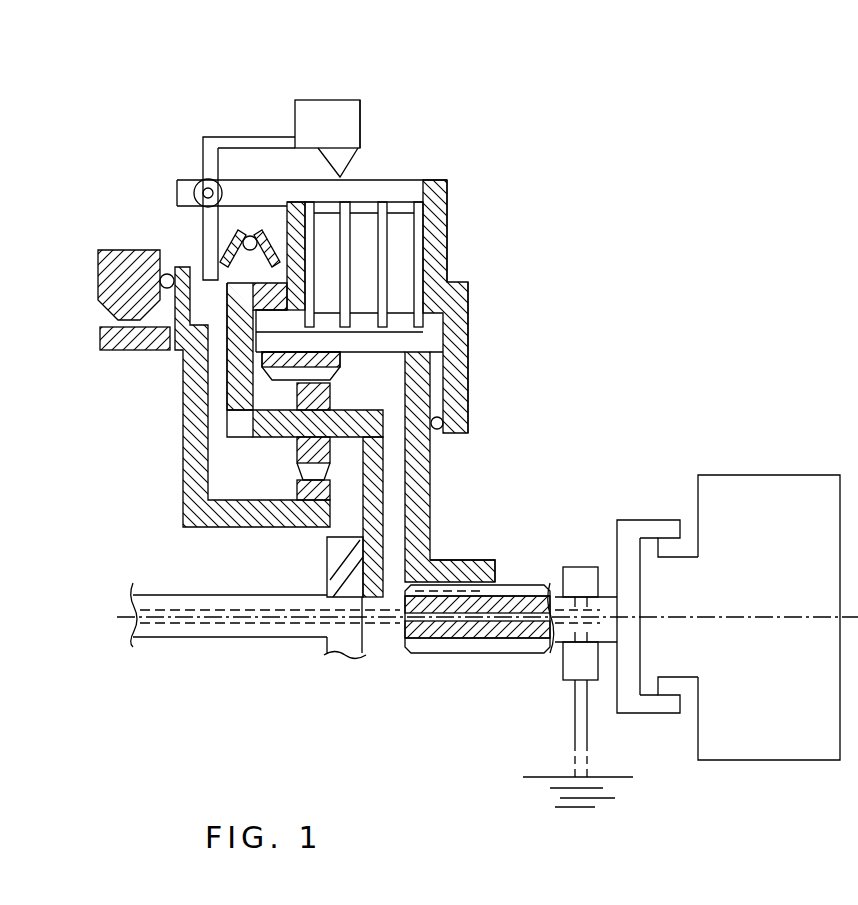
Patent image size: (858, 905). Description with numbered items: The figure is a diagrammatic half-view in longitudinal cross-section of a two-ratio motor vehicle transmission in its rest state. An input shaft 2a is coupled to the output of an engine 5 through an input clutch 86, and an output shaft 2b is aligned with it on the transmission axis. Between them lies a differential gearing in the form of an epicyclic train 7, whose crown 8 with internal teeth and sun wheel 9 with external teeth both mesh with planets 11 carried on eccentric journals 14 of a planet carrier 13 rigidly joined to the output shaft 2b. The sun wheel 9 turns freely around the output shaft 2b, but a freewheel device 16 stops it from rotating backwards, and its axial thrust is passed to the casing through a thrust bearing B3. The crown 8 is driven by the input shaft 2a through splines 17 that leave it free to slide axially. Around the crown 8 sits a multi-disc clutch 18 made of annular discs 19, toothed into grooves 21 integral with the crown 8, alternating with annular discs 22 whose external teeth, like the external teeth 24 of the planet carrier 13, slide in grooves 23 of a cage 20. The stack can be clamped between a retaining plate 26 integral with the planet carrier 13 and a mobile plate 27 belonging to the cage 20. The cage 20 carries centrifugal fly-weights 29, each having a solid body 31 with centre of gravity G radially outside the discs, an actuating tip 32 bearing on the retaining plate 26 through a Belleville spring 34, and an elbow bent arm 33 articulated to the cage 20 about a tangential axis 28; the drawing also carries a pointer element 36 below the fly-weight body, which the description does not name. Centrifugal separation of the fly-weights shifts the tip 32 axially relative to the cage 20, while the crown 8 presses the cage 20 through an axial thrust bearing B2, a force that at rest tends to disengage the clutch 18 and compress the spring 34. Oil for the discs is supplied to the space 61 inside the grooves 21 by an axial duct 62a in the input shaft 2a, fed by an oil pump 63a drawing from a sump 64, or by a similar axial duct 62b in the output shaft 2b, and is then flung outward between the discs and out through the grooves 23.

The input shaft 2a is at (477, 645).
The output shaft 2b is at (238, 638).
The engine 5 is at (758, 476).
The epicyclic train 7 is at (238, 475).
The crown 8 is at (268, 381).
The sun wheel 9 is at (322, 492).
The planets 11 is at (333, 447).
The planet carrier 13 is at (383, 540).
The eccentric journals 14 is at (245, 442).
The freewheel device 16 is at (143, 333).
The splines 17 is at (498, 565).
The multi-disc clutch 18 is at (427, 249).
The annular discs 19 is at (325, 252).
The cage 20 is at (398, 190).
The grooves 21 is at (407, 345).
The annular discs 22 is at (343, 302).
The grooves 23 is at (425, 193).
The external teeth 24 is at (290, 240).
The retaining plate 26 is at (282, 238).
The mobile plate 27 is at (440, 198).
The articulation axis 28 is at (198, 183).
The centrifugal fly-weights 29 is at (330, 90).
The solid body 31 is at (362, 113).
The actuating tip 32 is at (207, 253).
The elbow bent arm 33 is at (242, 136).
The Belleville spring 34 is at (253, 270).
The pointer 36 is at (358, 165).
The space 61 is at (355, 383).
The axial duct 62a is at (537, 617).
The axial duct 62b is at (213, 617).
The oil pump 63a is at (578, 575).
The sump 64 is at (547, 777).
The input clutch 86 is at (650, 735).
The axial thrust bearing B2 is at (446, 425).
The thrust bearing B3 is at (133, 250).